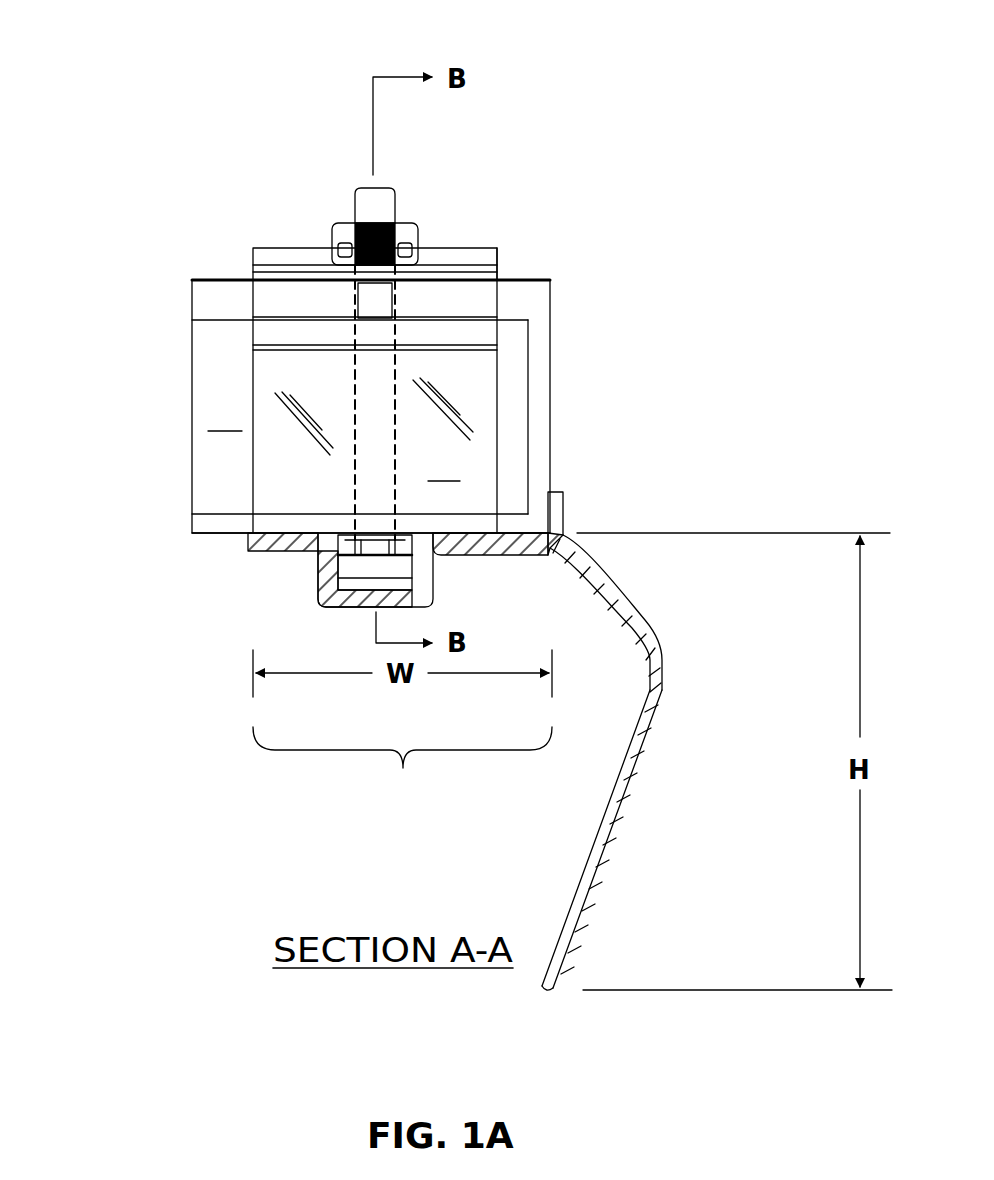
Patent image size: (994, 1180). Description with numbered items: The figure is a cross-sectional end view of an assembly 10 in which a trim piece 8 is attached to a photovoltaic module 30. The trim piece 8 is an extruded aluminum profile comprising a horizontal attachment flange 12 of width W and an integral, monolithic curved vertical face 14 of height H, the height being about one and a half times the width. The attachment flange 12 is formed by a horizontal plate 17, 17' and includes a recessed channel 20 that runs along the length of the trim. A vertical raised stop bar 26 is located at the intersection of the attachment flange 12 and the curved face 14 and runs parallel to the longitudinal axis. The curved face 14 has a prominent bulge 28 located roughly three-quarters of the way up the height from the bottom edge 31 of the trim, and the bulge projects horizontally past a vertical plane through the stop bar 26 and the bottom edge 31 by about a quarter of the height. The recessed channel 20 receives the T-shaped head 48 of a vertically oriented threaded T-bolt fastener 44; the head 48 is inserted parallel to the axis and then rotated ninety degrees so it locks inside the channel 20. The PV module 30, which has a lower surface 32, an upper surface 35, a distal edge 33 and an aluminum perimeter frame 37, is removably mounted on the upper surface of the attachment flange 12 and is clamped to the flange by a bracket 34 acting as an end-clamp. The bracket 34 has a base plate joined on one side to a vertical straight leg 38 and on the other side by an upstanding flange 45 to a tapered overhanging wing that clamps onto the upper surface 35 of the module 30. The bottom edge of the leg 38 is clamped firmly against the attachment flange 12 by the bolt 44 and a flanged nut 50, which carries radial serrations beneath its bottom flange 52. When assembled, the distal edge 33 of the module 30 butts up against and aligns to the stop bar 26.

The assembly 10 is at (118, 58).
The threaded T-bolt fastener 44 is at (378, 198).
The bottom flange 52 is at (332, 264).
The aluminum perimeter frame 37 is at (235, 280).
The upper surface 35 is at (207, 272).
The flanged nut 50 is at (420, 238).
The bracket 34 is at (542, 222).
The upstanding flange 45 is at (480, 296).
The distal edge 33 is at (552, 415).
The stop bar 26 is at (565, 518).
The photovoltaic module 30 is at (230, 406).
The vertical straight leg 38 is at (386, 390).
The lower surface 32 is at (207, 545).
The horizontal plate 17 is at (245, 594).
The horizontal plate 17' is at (518, 593).
The recessed channel 20 is at (328, 605).
The T-shaped head 48 is at (410, 568).
The trim piece 8 is at (676, 603).
The prominent bulge 28 is at (665, 662).
The curved vertical face 14 is at (630, 758).
The horizontal attachment flange 12 is at (402, 764).
The bottom edge 31 is at (555, 990).